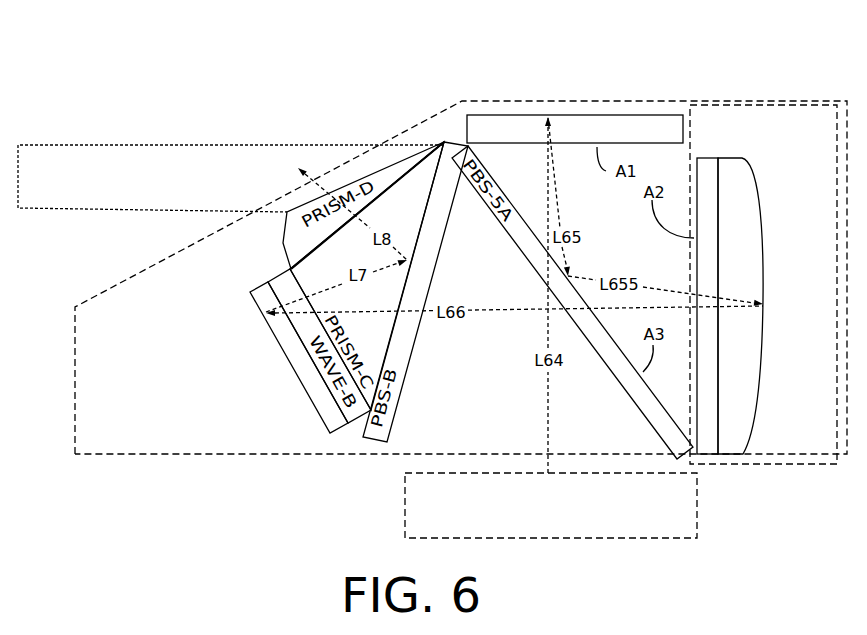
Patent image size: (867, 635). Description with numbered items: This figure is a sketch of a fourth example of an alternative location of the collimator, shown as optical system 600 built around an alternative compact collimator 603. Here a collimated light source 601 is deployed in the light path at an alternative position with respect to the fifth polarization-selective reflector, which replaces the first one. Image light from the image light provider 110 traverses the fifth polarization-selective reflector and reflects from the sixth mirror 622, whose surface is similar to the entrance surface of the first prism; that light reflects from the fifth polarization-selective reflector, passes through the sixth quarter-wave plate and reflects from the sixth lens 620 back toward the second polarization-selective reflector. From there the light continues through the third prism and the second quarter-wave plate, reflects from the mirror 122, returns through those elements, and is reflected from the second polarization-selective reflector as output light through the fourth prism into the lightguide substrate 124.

The optical system 600 is at (366, 90).
The compact collimator 603 is at (461, 277).
The lightguide substrate (LOE) 124 is at (230, 178).
The mirror 122 is at (299, 357).
The sixth mirror 622 is at (575, 129).
The collimated light source 601 is at (763, 284).
The sixth lens 620 is at (740, 306).
The image light provider 110 is at (551, 505).